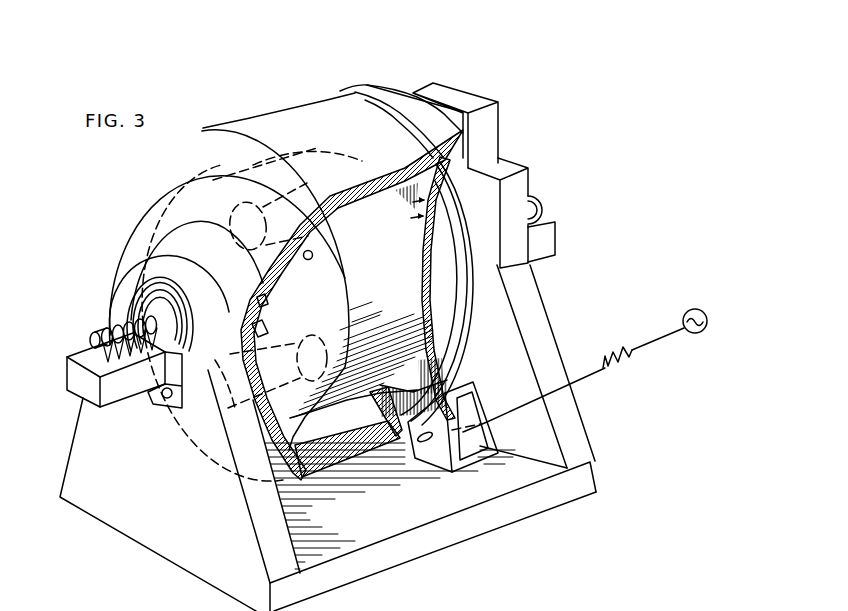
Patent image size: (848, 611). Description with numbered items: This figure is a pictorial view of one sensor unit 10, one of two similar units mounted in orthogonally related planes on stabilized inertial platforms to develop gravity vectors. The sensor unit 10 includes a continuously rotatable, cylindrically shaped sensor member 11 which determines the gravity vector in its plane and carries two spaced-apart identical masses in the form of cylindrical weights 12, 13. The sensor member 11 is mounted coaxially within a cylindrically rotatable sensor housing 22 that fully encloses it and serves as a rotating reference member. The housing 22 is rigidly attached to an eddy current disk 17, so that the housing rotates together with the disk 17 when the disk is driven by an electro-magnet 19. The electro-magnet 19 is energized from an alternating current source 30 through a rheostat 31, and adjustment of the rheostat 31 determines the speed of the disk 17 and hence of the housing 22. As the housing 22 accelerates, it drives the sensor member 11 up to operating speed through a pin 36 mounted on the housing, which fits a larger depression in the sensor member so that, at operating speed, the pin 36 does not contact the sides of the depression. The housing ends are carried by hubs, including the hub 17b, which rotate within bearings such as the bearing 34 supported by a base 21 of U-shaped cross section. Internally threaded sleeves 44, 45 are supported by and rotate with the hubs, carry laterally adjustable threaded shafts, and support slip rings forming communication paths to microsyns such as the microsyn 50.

The sensor unit 10 is at (219, 128).
The sensor housing 22 is at (274, 117).
The eddy current disk 17 is at (386, 88).
The cylindrical weight 12 is at (332, 155).
The internally threaded sleeve 45 is at (541, 187).
The pin 36 is at (318, 257).
The sensor member 11 is at (386, 274).
The microsyn 50 is at (264, 327).
The cylindrical weight 13 is at (304, 338).
The bearing 34 is at (130, 300).
The hub 17b is at (136, 313).
The internally threaded sleeve 44 is at (73, 353).
The alternating current source 30 is at (701, 310).
The rheostat 31 is at (628, 372).
The electro-magnet 19 is at (482, 432).
The base 21 is at (583, 437).